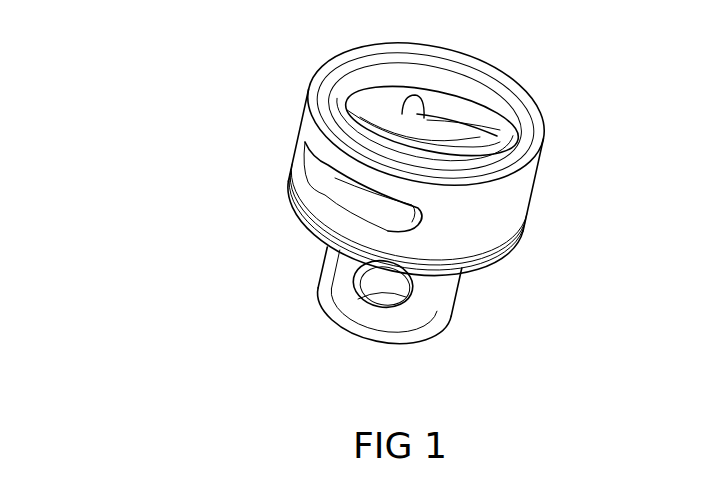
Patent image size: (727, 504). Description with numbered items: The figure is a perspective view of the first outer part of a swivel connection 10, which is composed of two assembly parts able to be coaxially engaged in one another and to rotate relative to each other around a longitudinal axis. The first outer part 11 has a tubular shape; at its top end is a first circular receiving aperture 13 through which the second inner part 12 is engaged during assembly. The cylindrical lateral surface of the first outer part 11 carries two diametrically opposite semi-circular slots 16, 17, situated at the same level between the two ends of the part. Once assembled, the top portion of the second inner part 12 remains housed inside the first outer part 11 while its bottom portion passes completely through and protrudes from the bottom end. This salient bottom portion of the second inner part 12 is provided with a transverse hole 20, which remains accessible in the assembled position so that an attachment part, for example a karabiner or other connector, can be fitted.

The swivel connection 10 is at (174, 284).
The first outer part 11 is at (513, 200).
The second inner part 12 is at (326, 280).
The first circular receiving aperture 13 is at (449, 81).
The semi-circular slot 16 is at (353, 187).
The semi-circular slot 17 is at (472, 118).
The transverse hole 20 is at (347, 300).